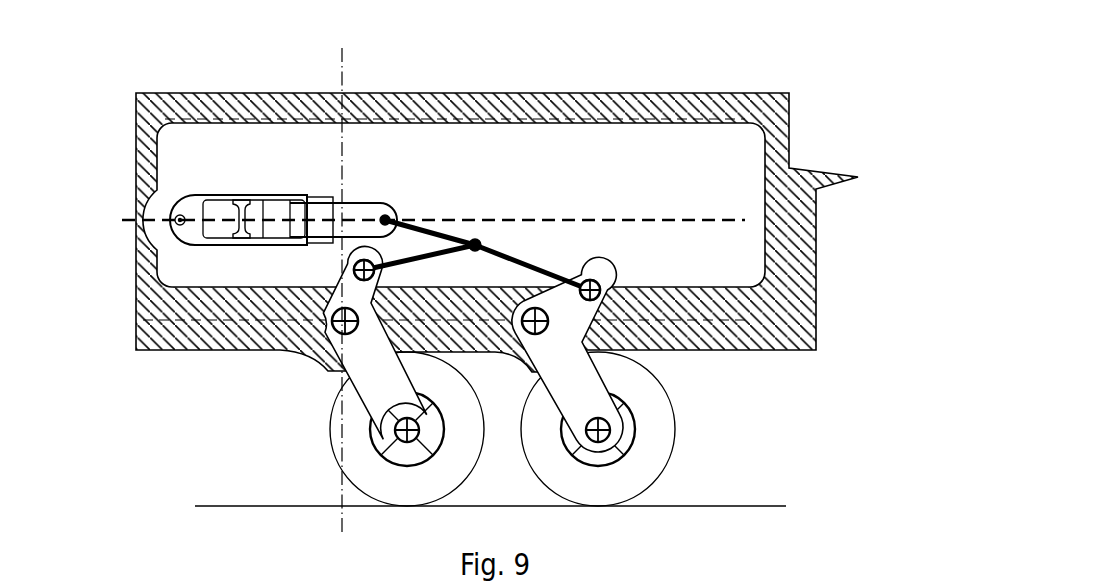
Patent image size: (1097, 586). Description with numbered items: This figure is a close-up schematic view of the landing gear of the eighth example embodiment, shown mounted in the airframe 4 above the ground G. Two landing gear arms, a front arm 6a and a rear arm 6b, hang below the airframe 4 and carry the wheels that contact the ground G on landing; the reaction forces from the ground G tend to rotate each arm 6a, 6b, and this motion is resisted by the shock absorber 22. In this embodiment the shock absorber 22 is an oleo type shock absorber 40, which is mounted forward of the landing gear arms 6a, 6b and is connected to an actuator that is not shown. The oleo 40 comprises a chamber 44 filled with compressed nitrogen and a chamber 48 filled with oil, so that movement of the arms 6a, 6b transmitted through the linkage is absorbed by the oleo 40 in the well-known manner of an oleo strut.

The airframe 4 is at (773, 105).
The shock absorber 22 is at (223, 242).
The oleo type shock absorber 40 is at (197, 196).
The chamber filled with compressed nitrogen 44 is at (227, 221).
The chamber filled with oil 48 is at (250, 220).
The front arm 6a is at (370, 373).
The rear arm 6b is at (647, 402).
The ground G is at (507, 503).